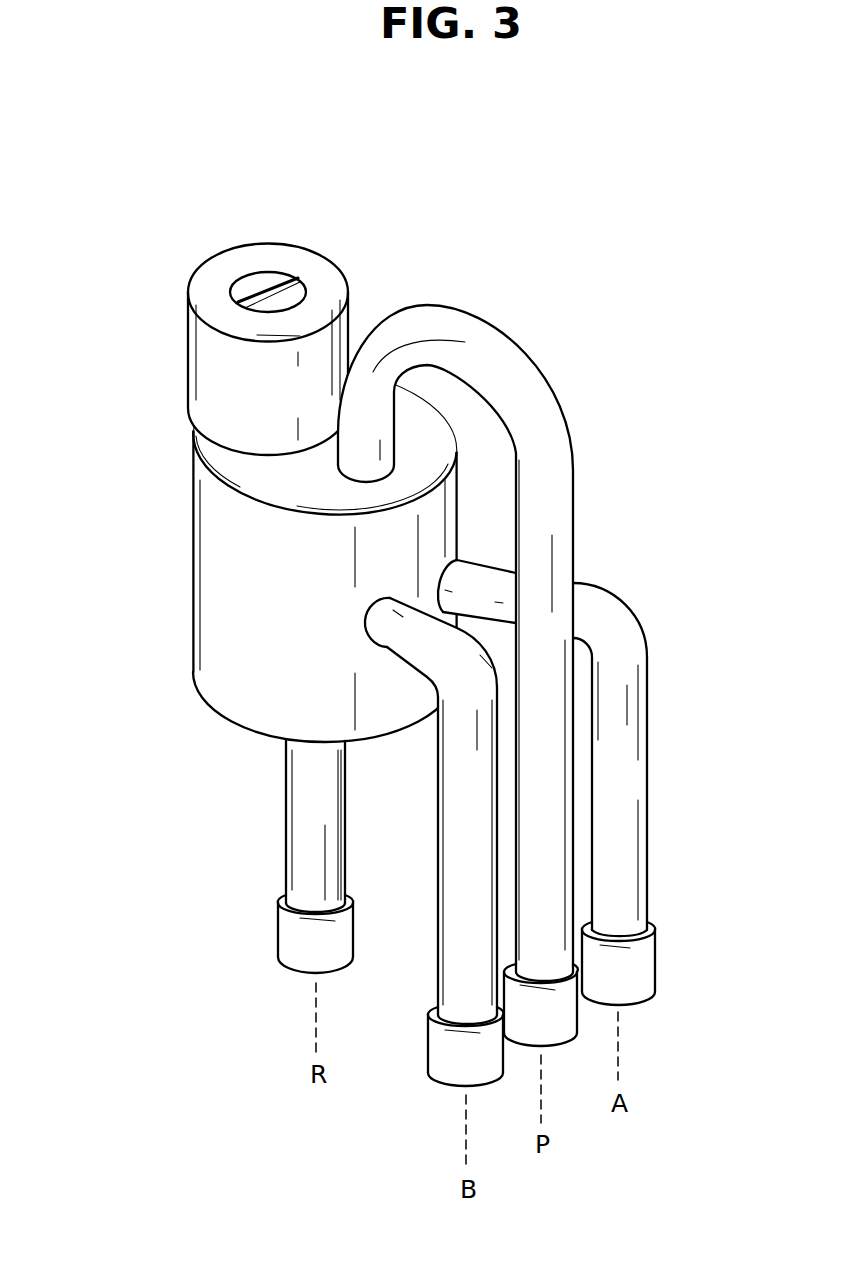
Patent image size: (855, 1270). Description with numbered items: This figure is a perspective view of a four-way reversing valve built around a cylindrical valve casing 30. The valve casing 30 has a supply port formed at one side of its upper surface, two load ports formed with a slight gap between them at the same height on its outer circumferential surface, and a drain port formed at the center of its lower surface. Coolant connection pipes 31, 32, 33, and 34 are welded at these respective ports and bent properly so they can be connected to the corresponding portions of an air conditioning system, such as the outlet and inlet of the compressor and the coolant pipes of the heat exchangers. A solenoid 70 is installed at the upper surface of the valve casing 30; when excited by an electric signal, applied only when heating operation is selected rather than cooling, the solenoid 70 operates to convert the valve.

The valve casing 30 is at (207, 597).
The coolant connection pipe 31 is at (565, 523).
The coolant connection pipe 32 is at (637, 800).
The coolant connection pipe 33 is at (450, 968).
The coolant connection pipe 34 is at (297, 812).
The solenoid 70 is at (200, 383).